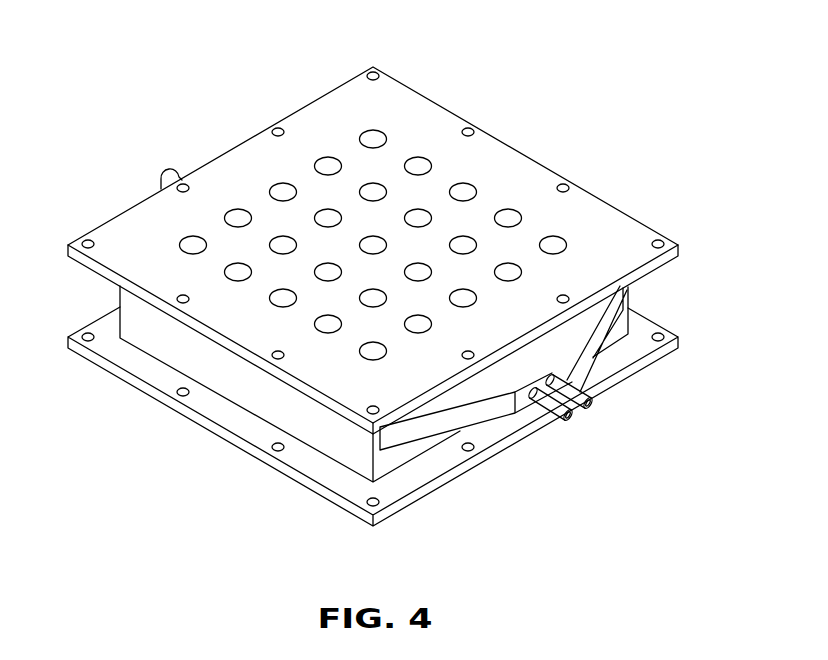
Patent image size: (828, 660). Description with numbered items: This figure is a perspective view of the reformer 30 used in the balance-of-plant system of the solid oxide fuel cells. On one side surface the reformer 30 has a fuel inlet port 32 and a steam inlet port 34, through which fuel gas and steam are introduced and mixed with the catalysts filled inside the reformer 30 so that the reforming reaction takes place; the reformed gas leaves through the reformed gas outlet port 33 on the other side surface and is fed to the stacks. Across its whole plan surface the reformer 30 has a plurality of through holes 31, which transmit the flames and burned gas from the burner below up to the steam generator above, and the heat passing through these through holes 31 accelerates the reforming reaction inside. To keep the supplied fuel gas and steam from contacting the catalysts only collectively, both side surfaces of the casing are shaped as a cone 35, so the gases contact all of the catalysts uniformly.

The reformer 30 is at (616, 32).
The through holes 31 is at (373, 348).
The fuel inlet port 32 is at (597, 390).
The reformed gas outlet port 33 is at (166, 173).
The steam inlet port 34 is at (547, 415).
The cone 35 is at (488, 389).